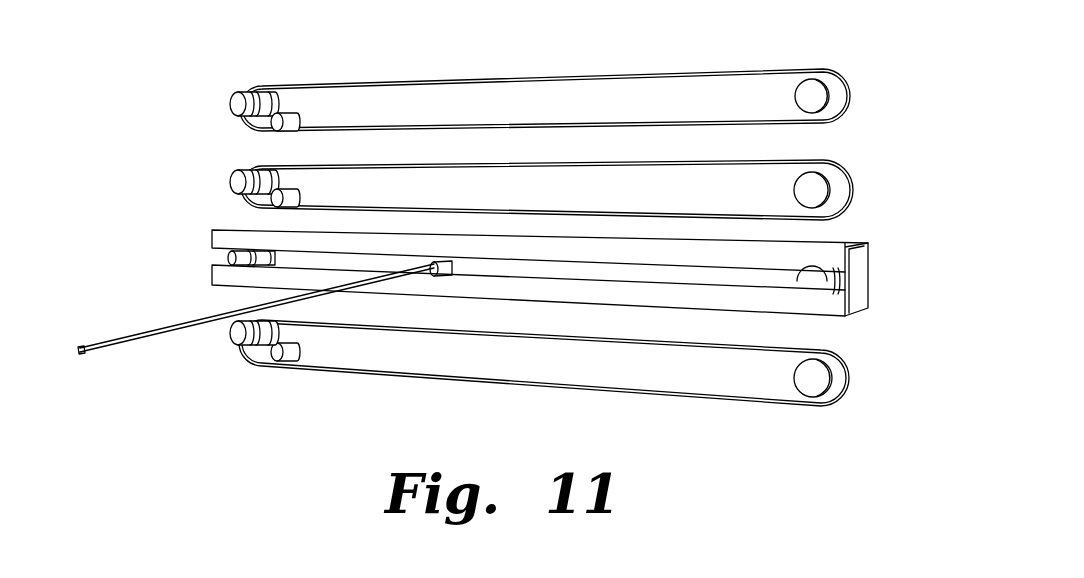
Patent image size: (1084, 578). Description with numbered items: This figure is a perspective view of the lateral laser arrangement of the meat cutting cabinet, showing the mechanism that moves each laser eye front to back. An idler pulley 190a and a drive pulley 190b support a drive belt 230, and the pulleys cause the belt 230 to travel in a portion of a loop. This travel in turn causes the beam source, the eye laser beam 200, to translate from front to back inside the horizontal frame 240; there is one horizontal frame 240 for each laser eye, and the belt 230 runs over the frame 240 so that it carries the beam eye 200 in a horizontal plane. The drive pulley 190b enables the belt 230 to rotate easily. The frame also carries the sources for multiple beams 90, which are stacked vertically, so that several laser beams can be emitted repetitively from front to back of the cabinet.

The rod 90 is at (145, 334).
The drive rollers 190a is at (236, 102).
The end roller 190b is at (812, 378).
The idler rollers 200 is at (288, 190).
The belt 230 is at (540, 78).
The channel support 240 is at (557, 280).